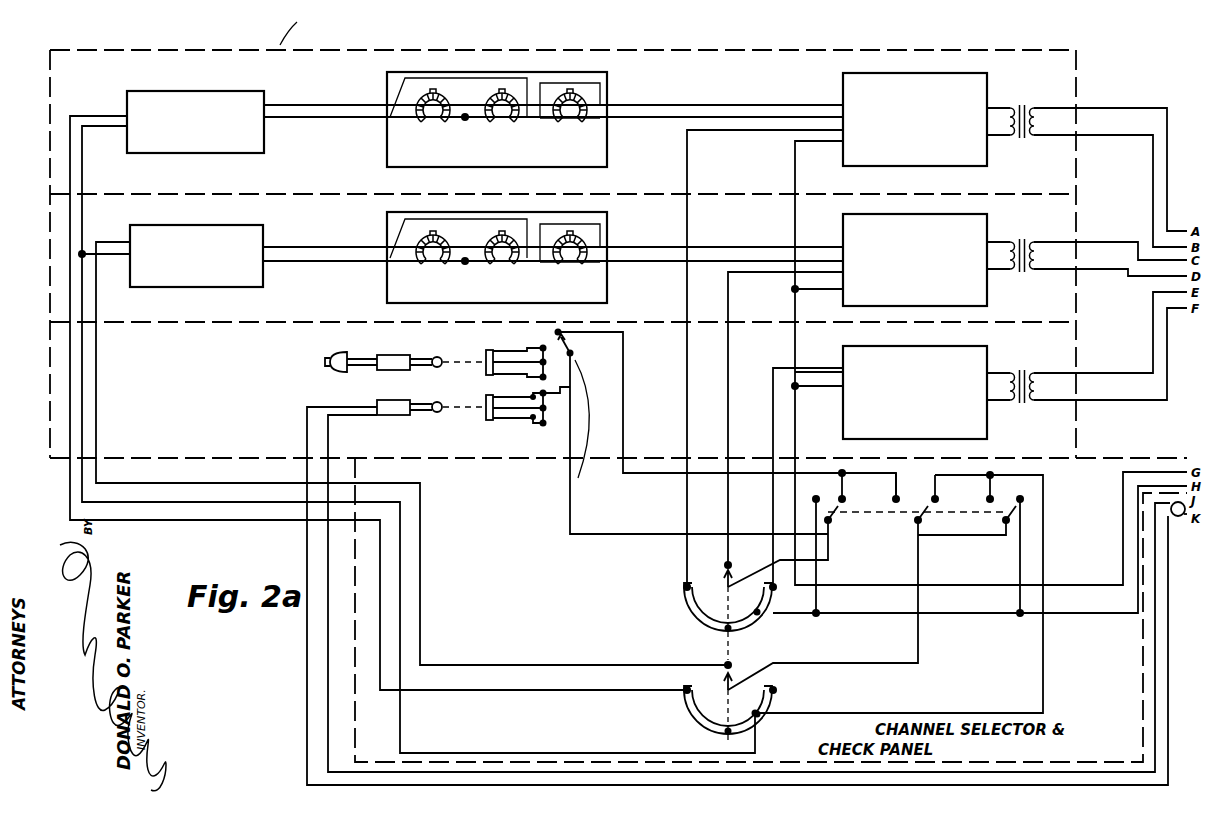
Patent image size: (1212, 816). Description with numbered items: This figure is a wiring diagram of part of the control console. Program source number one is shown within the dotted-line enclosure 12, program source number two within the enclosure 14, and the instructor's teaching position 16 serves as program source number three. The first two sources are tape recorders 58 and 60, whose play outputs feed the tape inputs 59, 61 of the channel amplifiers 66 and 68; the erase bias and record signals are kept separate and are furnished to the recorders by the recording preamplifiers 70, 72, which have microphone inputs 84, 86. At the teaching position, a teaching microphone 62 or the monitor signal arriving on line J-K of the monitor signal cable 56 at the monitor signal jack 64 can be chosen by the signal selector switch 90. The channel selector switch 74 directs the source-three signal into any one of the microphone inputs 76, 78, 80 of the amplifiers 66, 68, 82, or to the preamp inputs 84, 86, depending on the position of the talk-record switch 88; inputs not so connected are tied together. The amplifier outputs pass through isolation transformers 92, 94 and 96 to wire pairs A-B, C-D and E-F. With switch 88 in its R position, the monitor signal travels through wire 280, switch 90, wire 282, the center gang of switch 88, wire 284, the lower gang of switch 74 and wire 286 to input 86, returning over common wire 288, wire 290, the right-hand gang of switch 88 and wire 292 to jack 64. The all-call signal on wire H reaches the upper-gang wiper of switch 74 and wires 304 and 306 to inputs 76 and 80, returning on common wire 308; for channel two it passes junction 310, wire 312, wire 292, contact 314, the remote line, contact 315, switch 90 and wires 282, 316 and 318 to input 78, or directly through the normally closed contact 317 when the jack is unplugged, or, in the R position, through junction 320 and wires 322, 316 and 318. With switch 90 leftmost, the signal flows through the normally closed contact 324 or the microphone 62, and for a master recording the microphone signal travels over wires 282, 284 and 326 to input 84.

The dotted-line enclosure 12 is at (780, 58).
The enclosure 14 is at (630, 200).
The instructor's teaching position 16 is at (213, 325).
The monitor signal cable 56 is at (1174, 517).
The tape recorder 58 is at (607, 82).
The tape input 59 is at (843, 108).
The tape recorder 60 is at (607, 292).
The tape input 61 is at (843, 252).
The teaching microphone 62 is at (338, 370).
The monitor signal jack 64 is at (372, 414).
The amplifier 66 is at (878, 166).
The amplifier 68 is at (975, 298).
The recording preamplifier 70 is at (228, 90).
The recording preamplifier 72 is at (210, 228).
The channel selector switch 74 is at (745, 648).
The microphone input 76 is at (830, 142).
The microphone input 78 is at (835, 289).
The microphone input 80 is at (835, 372).
The amplifier 82 is at (975, 431).
The microphone input 84 is at (122, 116).
The microphone input 86 is at (125, 242).
The talk-record switch 88 is at (958, 520).
The signal selector switch 90 is at (578, 337).
The isolation transformer 92 is at (1016, 108).
The isolation transformer 94 is at (1016, 242).
The isolation transformer 96 is at (1016, 373).
The wire 280 is at (556, 420).
The wire 282 is at (628, 365).
The wire 284 is at (916, 549).
The wire 286 is at (546, 660).
The common wire 288 is at (86, 344).
The wire 290 is at (935, 710).
The wire 292 is at (630, 536).
The wire 304 is at (688, 490).
The wire 306 is at (770, 513).
The common wire 308 is at (793, 343).
The junction 310 is at (1020, 616).
The wire 312 is at (1020, 548).
The contact 314 is at (493, 424).
The contact 315 is at (518, 394).
The wire 316 is at (829, 547).
The normally closed contact 317 is at (530, 420).
The wire 318 is at (728, 362).
The junction 320 is at (820, 616).
The wire 322 is at (812, 570).
The normally closed contact 324 is at (520, 358).
The wire 326 is at (565, 690).